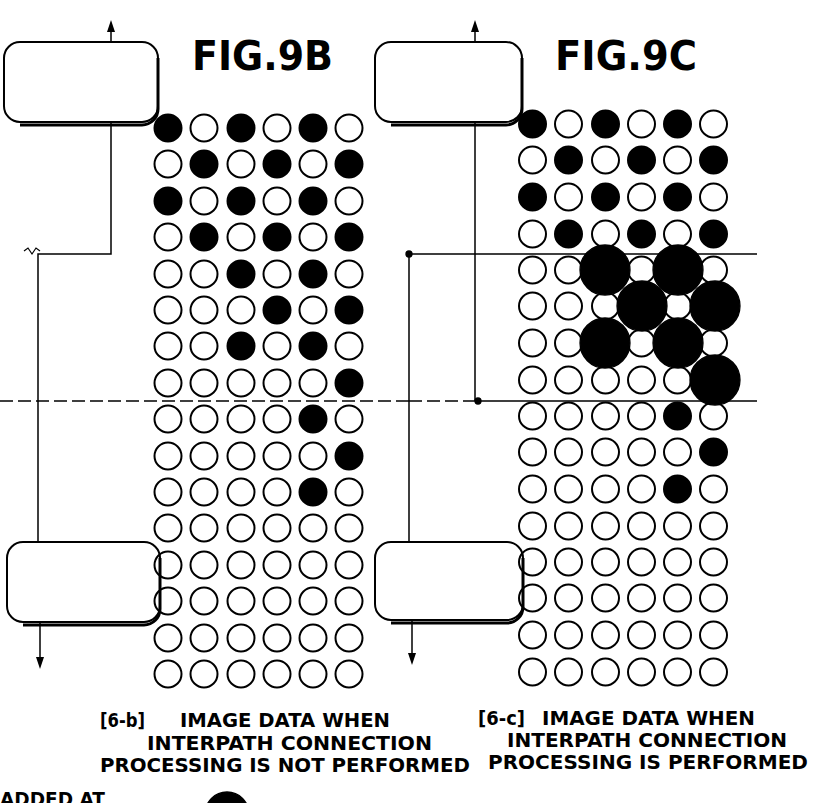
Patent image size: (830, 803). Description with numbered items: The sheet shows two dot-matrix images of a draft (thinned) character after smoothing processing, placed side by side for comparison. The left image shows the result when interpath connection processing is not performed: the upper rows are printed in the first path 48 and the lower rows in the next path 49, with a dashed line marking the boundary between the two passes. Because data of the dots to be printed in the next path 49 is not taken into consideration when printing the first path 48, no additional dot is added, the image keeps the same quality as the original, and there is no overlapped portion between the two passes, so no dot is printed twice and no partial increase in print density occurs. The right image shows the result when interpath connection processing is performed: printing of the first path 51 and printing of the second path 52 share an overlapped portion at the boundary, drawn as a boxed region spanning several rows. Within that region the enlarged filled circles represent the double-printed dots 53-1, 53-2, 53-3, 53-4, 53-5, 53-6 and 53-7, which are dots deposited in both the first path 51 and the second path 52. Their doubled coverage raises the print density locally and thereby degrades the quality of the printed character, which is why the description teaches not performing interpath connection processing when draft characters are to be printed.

In FIG. 9B, the first path 48 is at (62, 122).
In FIG. 9B, the next path 49 is at (111, 542).
In FIG. 9C, the first path 51 is at (414, 122).
In FIG. 9C, the second path 52 is at (486, 542).
In FIG. 9C, the double-printed dot 53-1 is at (582, 264).
In FIG. 9C, the double-printed dot 53-2 is at (620, 302).
In FIG. 9C, the double-printed dot 53-3 is at (582, 343).
In FIG. 9C, the double-printed dot 53-4 is at (700, 266).
In FIG. 9C, the double-printed dot 53-5 is at (738, 305).
In FIG. 9C, the double-printed dot 53-6 is at (702, 341).
In FIG. 9C, the double-printed dot 53-7 is at (738, 378).